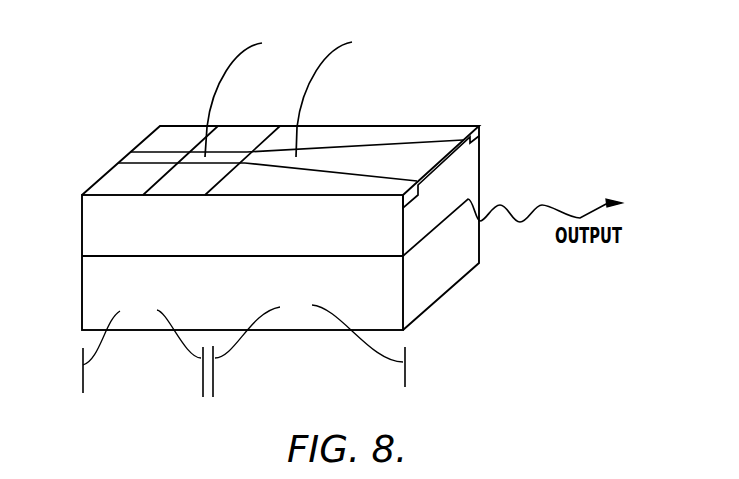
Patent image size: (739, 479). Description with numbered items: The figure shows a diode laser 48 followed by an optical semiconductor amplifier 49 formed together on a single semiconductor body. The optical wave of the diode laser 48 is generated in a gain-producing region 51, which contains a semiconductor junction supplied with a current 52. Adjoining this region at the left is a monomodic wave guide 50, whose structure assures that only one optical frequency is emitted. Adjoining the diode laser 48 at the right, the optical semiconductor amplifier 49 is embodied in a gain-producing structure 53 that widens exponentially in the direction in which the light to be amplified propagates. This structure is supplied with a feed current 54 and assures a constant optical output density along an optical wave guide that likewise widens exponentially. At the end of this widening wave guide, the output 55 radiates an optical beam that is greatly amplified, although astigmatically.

The diode laser 48 is at (143, 348).
The optical semiconductor amplifier 49 is at (309, 348).
The monomodic wave guide 50 is at (158, 157).
The gain-producing region 51 is at (233, 145).
The current 52 is at (213, 100).
The gain-producing structure 53 is at (393, 160).
The feed current 54 is at (305, 102).
The output 55 is at (450, 256).